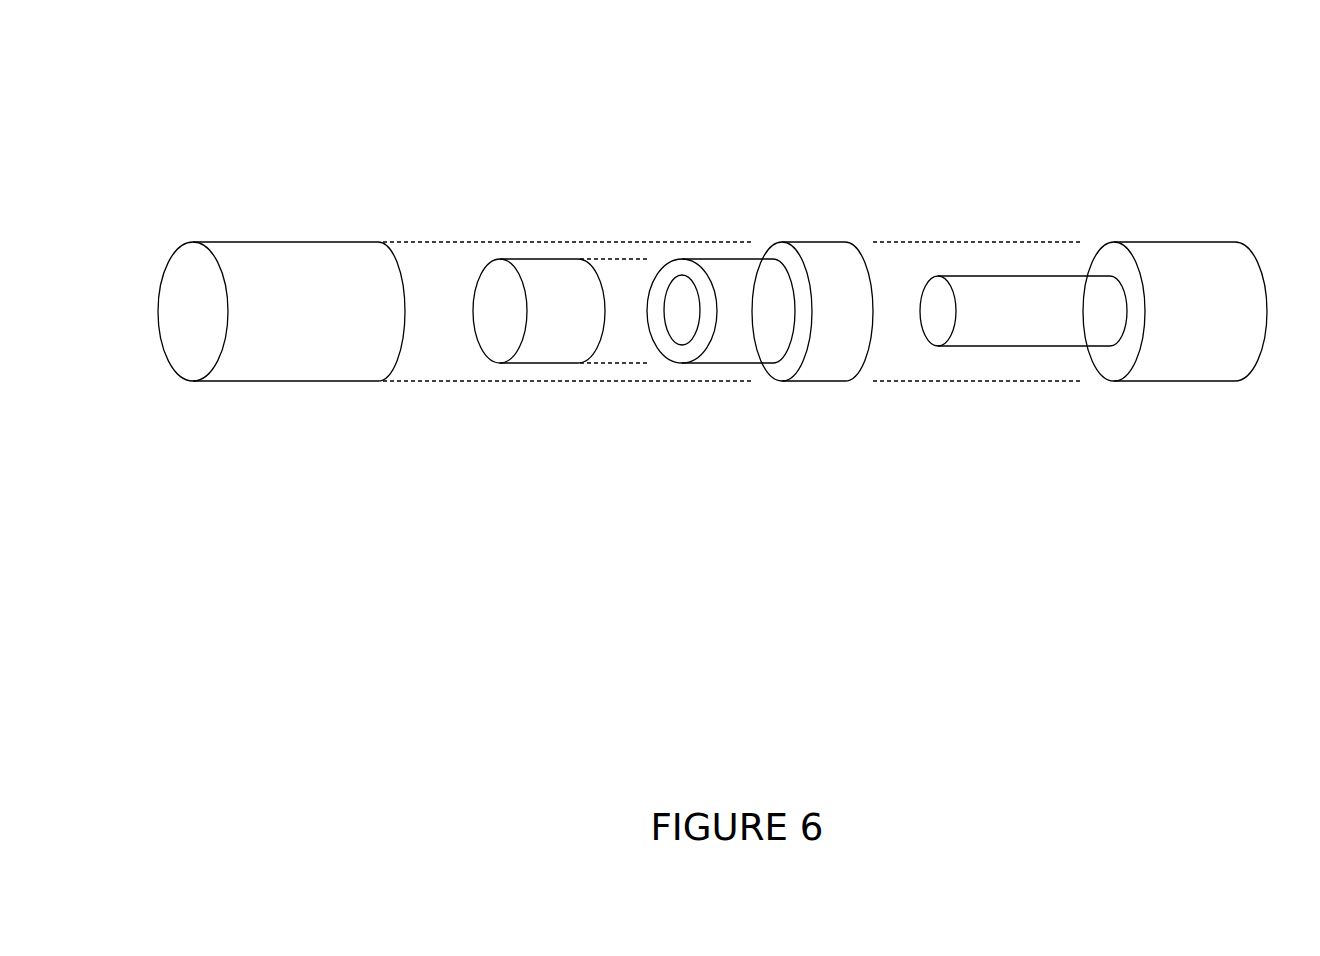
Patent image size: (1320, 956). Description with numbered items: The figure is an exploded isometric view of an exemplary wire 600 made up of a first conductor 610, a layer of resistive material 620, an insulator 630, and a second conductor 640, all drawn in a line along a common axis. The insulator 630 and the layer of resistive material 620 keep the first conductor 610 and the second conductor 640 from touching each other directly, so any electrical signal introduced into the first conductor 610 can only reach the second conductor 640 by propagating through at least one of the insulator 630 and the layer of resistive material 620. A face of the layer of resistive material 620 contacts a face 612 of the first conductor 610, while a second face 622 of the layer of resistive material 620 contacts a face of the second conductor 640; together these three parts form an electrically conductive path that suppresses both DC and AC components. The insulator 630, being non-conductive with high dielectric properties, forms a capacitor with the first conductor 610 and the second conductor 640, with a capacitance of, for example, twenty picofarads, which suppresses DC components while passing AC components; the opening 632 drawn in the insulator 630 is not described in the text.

The wire 600 is at (185, 83).
The first conductor 610 is at (1135, 242).
The face of the first conductor 612 is at (930, 343).
The layer of resistive material 620 is at (542, 259).
The second face of the layer of resistive material 622 is at (485, 270).
The insulator 630 is at (800, 242).
The bore 632 is at (683, 343).
The second conductor 640 is at (253, 242).